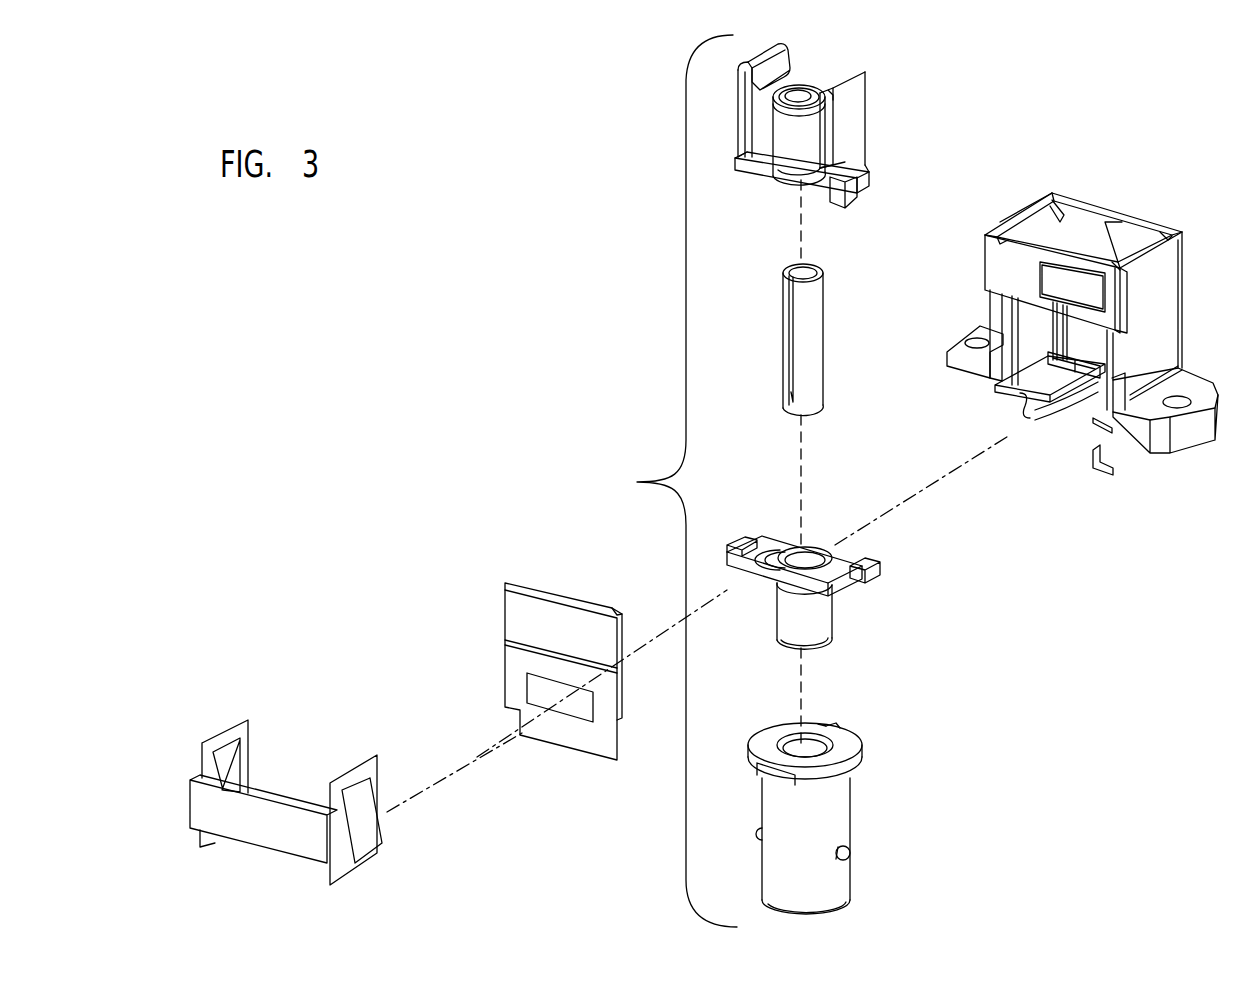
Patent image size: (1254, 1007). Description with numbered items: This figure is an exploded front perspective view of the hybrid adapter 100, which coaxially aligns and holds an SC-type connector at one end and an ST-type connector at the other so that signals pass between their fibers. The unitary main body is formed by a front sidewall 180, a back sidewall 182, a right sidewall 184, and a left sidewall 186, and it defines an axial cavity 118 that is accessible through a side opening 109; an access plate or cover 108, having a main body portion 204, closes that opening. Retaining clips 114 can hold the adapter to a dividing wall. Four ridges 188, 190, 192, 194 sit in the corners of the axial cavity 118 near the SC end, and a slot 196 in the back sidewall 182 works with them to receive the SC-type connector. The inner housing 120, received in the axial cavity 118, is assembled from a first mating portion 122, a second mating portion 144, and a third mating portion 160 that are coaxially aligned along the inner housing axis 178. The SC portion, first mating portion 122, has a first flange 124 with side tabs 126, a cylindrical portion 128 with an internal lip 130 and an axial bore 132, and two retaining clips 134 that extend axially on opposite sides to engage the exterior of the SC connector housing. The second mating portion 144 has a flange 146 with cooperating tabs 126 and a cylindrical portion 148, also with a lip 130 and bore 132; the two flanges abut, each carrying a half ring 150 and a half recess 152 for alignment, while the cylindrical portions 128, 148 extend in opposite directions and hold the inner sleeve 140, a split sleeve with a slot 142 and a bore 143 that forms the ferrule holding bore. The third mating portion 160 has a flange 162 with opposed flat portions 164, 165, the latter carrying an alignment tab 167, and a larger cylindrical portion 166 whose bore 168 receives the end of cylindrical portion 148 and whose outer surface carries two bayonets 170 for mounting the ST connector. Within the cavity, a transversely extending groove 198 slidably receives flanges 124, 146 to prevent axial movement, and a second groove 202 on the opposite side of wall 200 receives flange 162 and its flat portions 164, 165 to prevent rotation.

The adapter 100 is at (592, 348).
The access plate or cover 108 is at (566, 731).
The side opening 109 is at (1101, 352).
The retaining clips 114 is at (346, 876).
The axial cavity 118 is at (1086, 235).
The inner housing 120 is at (664, 481).
The first mating portion 122 is at (866, 139).
The first flange 124 is at (868, 173).
The side tabs 126 is at (852, 203).
The cylindrical portion 128 is at (793, 150).
The internal lip 130 is at (814, 92).
The axial bore 132 is at (799, 96).
The retaining clips 134 is at (741, 83).
The inner sleeve 140 is at (819, 379).
The slot 142 is at (791, 331).
The bore 143 is at (807, 277).
The second mating portion 144 is at (833, 616).
The flange 146 is at (846, 591).
The cylindrical portion 148 is at (813, 631).
The half ring 150 is at (829, 561).
The half recess 152 is at (779, 562).
The third mating portion 160 is at (851, 821).
The flange 162 is at (858, 754).
The flat portion 164 is at (766, 773).
The flat portion 165 is at (819, 726).
The cylindrical portion 166 is at (851, 886).
The alignment tab 167 is at (836, 727).
The bore 168 is at (796, 749).
The bayonets 170 is at (850, 854).
The inner housing axis 178 is at (799, 461).
The front sidewall 180 is at (1004, 266).
The back sidewall 182 is at (1076, 201).
The right sidewall 184 is at (1154, 296).
The left sidewall 186 is at (1026, 211).
The ridge 188 is at (1003, 232).
The ridge 190 is at (1053, 201).
The ridge 192 is at (1162, 238).
The ridge 194 is at (1118, 265).
The slot 196 is at (1106, 226).
The transversely extending groove 198 is at (1010, 389).
The wall 200 is at (1040, 419).
The second groove 202 is at (1016, 409).
The main body portion 204 is at (1091, 396).